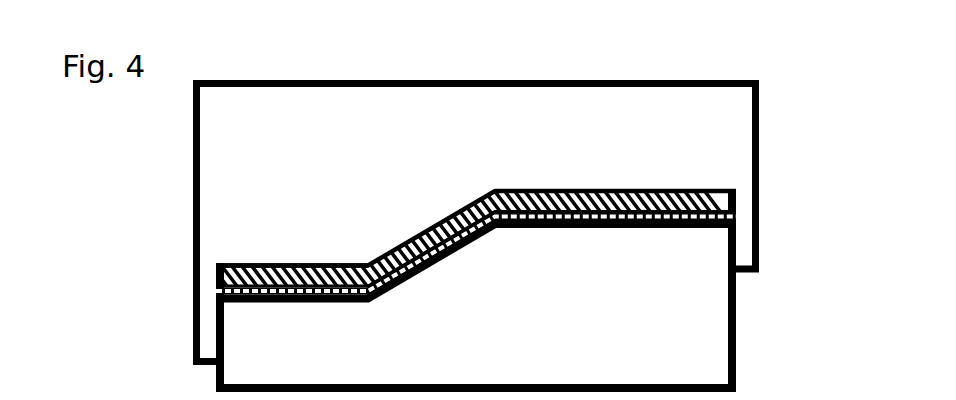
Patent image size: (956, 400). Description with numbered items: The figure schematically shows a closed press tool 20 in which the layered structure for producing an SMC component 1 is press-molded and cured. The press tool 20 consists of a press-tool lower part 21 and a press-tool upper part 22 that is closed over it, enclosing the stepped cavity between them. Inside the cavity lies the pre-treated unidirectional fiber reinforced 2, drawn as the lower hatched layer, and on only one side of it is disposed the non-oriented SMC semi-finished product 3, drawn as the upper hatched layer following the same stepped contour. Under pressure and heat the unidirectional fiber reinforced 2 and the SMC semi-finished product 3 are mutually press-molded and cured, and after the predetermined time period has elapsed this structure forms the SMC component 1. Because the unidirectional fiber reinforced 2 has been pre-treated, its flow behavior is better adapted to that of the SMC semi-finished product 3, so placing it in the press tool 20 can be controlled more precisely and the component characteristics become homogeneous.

The press tool 20 is at (158, 259).
The press-tool lower part 21 is at (716, 340).
The press-tool upper part 22 is at (545, 90).
The SMC component 1 is at (328, 278).
The unidirectional fiber reinforced 2 is at (561, 222).
The SMC semi-finished product 3 is at (612, 200).